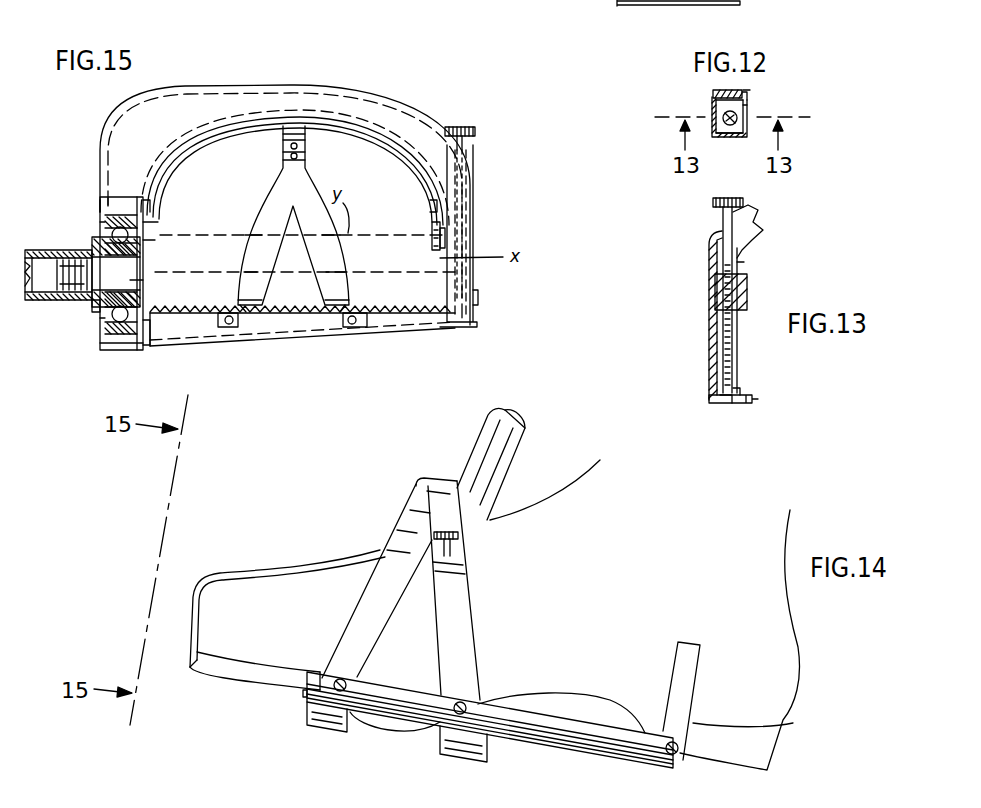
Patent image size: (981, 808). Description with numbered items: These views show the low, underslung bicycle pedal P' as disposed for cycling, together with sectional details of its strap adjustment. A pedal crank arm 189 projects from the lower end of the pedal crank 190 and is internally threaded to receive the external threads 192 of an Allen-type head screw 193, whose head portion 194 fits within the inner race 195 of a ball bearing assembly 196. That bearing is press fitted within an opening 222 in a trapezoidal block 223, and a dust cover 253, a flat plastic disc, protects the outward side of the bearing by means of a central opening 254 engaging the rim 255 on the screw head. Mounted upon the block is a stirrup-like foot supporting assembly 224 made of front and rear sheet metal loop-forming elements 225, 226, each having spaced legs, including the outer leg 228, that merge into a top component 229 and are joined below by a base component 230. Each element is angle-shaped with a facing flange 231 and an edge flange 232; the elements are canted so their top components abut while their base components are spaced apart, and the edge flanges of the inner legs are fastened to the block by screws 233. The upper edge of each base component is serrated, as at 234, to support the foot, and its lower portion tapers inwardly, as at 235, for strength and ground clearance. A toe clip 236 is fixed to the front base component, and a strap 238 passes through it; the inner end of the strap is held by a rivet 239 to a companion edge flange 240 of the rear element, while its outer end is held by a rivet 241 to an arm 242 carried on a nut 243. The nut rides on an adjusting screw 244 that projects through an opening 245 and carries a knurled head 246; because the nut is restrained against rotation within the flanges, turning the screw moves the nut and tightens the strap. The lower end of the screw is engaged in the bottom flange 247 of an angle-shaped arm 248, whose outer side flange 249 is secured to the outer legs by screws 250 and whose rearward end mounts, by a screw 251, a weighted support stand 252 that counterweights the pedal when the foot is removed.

In FIG. 15, the pedal crank arm 189 is at (42, 300).
In FIG. 14, the pedal crank 190 is at (520, 443).
In FIG. 15, the external threads 192 is at (72, 302).
In FIG. 15, the head screw 193 is at (97, 310).
In FIG. 15, the head portion 194 is at (108, 252).
In FIG. 15, the inner race 195 is at (150, 323).
In FIG. 15, the ball bearing assembly 196 is at (100, 198).
In FIG. 15, the opening 222 is at (122, 192).
In FIG. 15, the block 223 is at (149, 212).
In FIG. 15, the foot supporting assembly 224 is at (380, 100).
In FIG. 14, the front loop-forming element 225 is at (392, 533).
In FIG. 14, the rear loop-forming element 226 is at (460, 507).
In FIG. 15, the outer leg 228 is at (466, 202).
In FIG. 15, the top component 229 is at (300, 86).
In FIG. 15, the base component 230 is at (400, 320).
In FIG. 13, the base component 230 is at (712, 394).
In FIG. 15, the facing flange 231 is at (445, 152).
In FIG. 12, the facing flange 231 is at (713, 108).
In FIG. 13, the facing flange 231 is at (712, 312).
In FIG. 15, the edge flange 232 is at (98, 343).
In FIG. 12, the edge flange 232 is at (720, 138).
In FIG. 13, the edge flange 232 is at (739, 392).
In FIG. 15, the screws 233 is at (100, 222).
In FIG. 14, the screws 233 is at (355, 718).
In FIG. 15, the serrations 234 is at (375, 282).
In FIG. 15, the tapered lower portion 235 is at (275, 337).
In FIG. 15, the toe clip 236 is at (278, 204).
In FIG. 14, the toe clip 236 is at (250, 572).
In FIG. 12, the strap 238 is at (740, 90).
In FIG. 15, the rivet 239 is at (155, 194).
In FIG. 15, the companion edge flange 240 is at (205, 233).
In FIG. 12, the companion edge flange 240 is at (716, 99).
In FIG. 13, the companion edge flange 240 is at (738, 264).
In FIG. 15, the rivet 241 is at (440, 227).
In FIG. 12, the rivet 241 is at (720, 93).
In FIG. 15, the arm 242 is at (443, 240).
In FIG. 12, the arm 242 is at (715, 92).
In FIG. 12, the nut 243 is at (745, 113).
In FIG. 13, the nut 243 is at (748, 292).
In FIG. 12, the adjusting screw 244 is at (731, 127).
In FIG. 13, the adjusting screw 244 is at (736, 248).
In FIG. 13, the opening 245 is at (720, 230).
In FIG. 14, the opening 245 is at (460, 556).
In FIG. 13, the knurled head 246 is at (727, 200).
In FIG. 14, the knurled head 246 is at (462, 539).
In FIG. 15, the bottom flange 247 is at (433, 328).
In FIG. 13, the bottom flange 247 is at (745, 403).
In FIG. 14, the bottom flange 247 is at (542, 742).
In FIG. 15, the arm 248 is at (478, 313).
In FIG. 14, the arm 248 is at (480, 704).
In FIG. 15, the outer side flange 249 is at (480, 298).
In FIG. 14, the outer side flange 249 is at (530, 720).
In FIG. 14, the screws 250 is at (315, 705).
In FIG. 12, the screw 251 is at (632, 5).
In FIG. 14, the weighted support stand 252 is at (690, 642).
In FIG. 15, the dust cover 253 is at (143, 230).
In FIG. 14, the dust cover 253 is at (393, 733).
In FIG. 15, the central opening 254 is at (143, 247).
In FIG. 15, the rim 255 is at (140, 286).